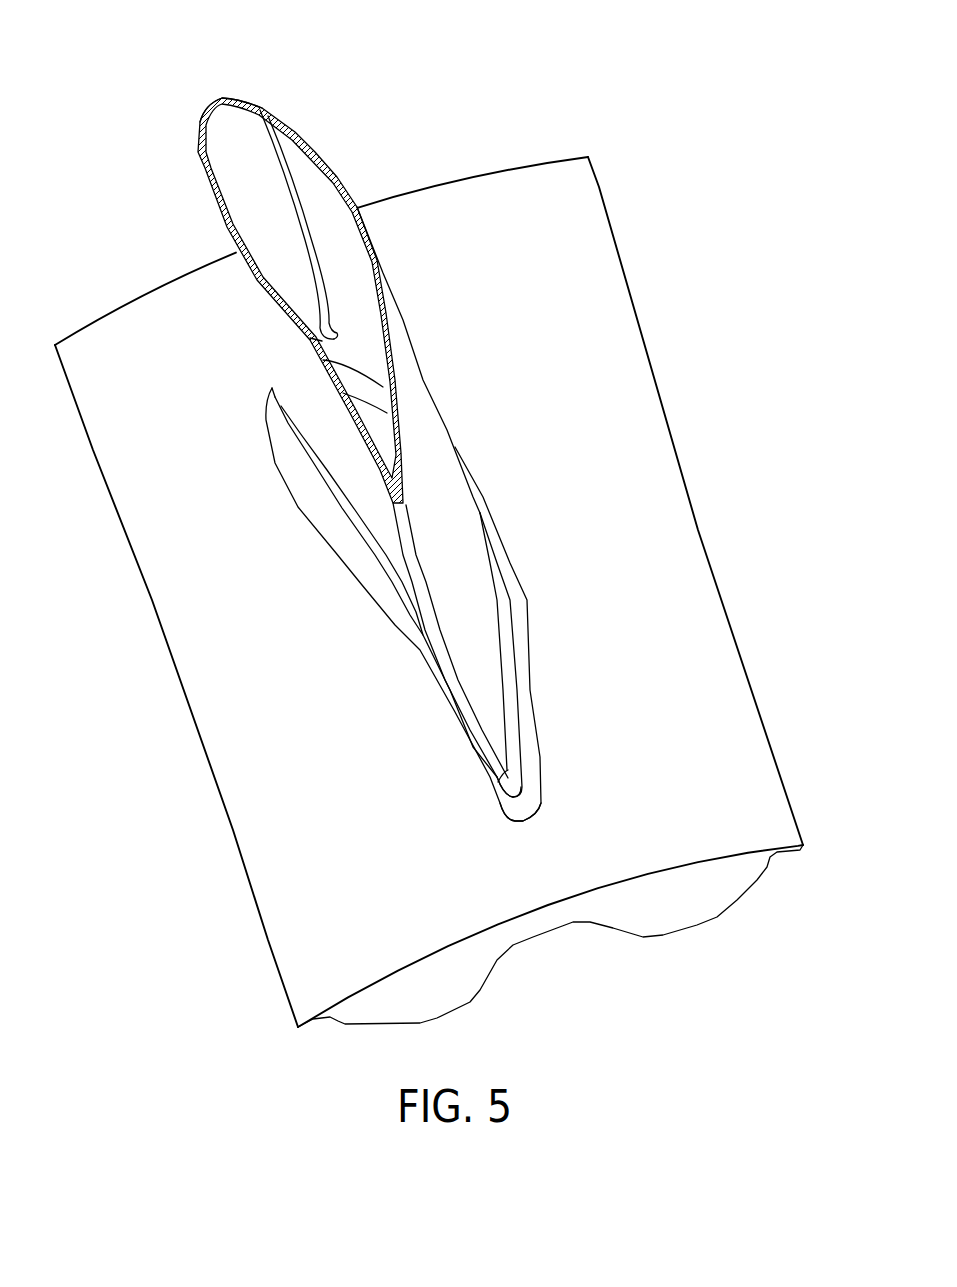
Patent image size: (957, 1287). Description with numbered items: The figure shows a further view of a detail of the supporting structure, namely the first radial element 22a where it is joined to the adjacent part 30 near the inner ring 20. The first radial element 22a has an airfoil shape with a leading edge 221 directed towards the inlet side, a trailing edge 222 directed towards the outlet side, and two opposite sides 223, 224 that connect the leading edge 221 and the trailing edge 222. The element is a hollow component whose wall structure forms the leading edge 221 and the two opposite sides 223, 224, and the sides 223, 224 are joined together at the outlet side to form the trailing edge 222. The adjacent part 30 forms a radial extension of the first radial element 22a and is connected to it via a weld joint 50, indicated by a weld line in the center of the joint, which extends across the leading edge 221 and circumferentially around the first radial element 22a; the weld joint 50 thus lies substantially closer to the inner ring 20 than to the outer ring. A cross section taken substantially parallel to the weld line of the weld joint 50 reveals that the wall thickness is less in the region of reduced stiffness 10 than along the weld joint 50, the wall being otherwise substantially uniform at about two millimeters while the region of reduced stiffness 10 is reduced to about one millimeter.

The region of reduced stiffness 10 is at (259, 207).
The inner ring 20 is at (666, 681).
The first radial element 22a is at (141, 116).
The adjacent part 30 is at (510, 662).
The weld joint 50 is at (498, 625).
The leading edge 221 is at (213, 99).
The trailing edge 222 is at (413, 562).
The opposite side 223 is at (328, 438).
The opposite side 224 is at (425, 477).